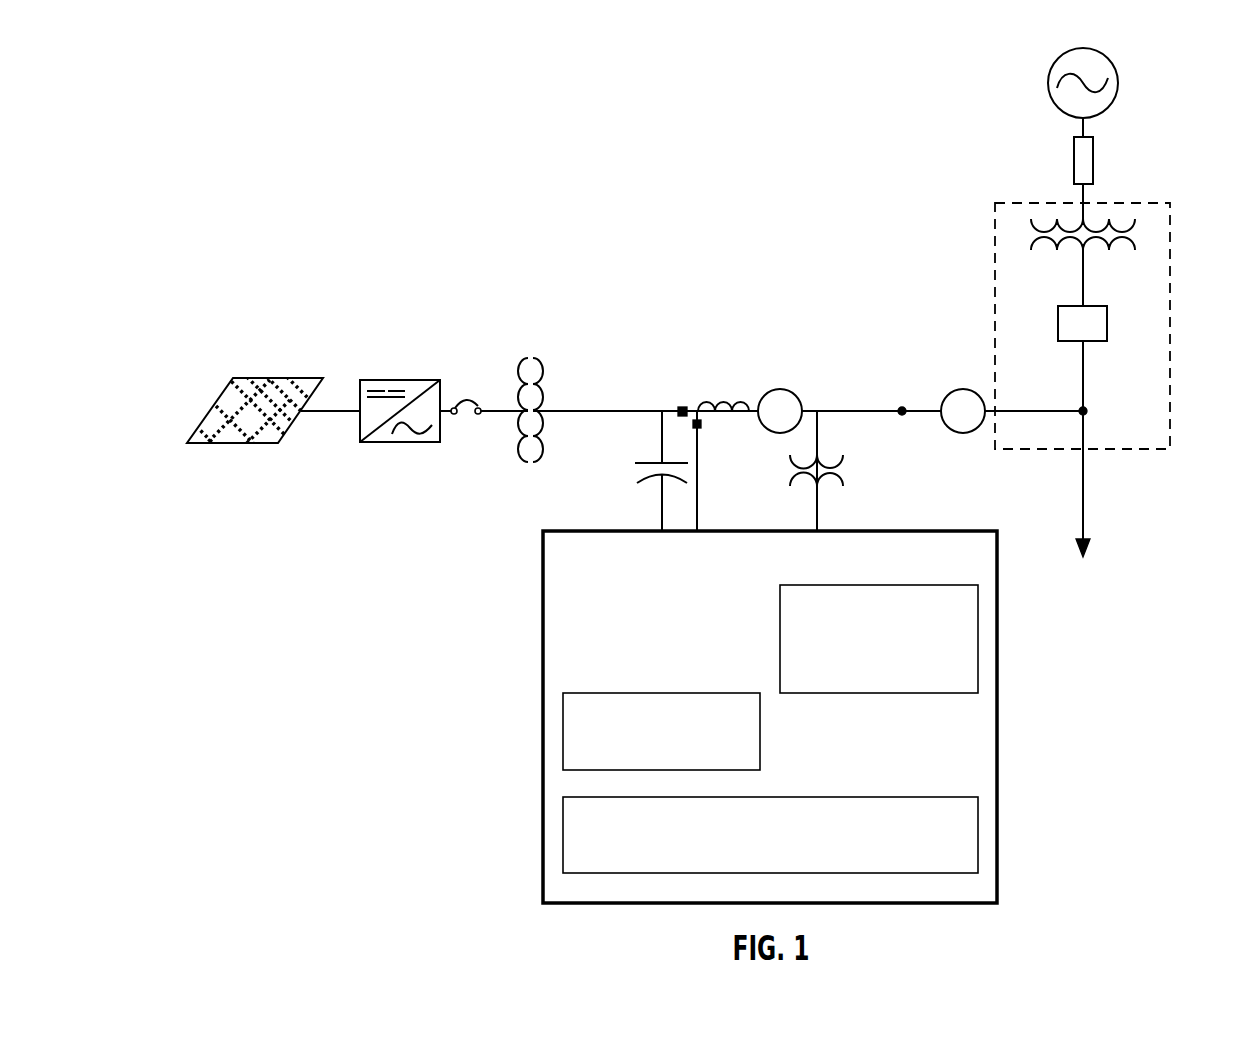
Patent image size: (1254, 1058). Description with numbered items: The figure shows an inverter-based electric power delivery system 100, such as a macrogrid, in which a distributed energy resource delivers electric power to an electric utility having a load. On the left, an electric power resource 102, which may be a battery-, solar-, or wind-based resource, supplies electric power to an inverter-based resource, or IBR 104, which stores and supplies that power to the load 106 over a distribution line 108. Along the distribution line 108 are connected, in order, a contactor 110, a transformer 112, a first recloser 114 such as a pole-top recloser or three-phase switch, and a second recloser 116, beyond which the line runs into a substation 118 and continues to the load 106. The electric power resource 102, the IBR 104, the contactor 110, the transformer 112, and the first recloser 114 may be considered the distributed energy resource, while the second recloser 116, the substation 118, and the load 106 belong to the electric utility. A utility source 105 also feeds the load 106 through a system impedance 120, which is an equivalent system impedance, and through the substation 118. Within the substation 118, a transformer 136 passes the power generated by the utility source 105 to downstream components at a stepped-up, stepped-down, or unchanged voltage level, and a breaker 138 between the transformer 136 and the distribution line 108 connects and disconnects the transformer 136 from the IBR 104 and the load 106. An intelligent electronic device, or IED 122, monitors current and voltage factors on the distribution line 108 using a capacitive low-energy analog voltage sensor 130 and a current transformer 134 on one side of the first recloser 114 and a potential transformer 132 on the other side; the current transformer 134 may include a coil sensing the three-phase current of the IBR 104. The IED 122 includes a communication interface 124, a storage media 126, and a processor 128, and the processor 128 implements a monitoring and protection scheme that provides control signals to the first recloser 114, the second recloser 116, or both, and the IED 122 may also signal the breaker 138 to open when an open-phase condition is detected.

The electric power delivery system 100 is at (813, 82).
The electric power resource 102 is at (275, 379).
The inverter-based resource (IBR) 104 is at (398, 380).
The utility source 105 is at (1117, 68).
The load 106 is at (1087, 539).
The distribution line 108 is at (625, 410).
The contactor 110 is at (466, 397).
The transformer 112 is at (540, 360).
The first recloser 114 is at (779, 389).
The second recloser 116 is at (962, 389).
The substation 118 is at (1171, 288).
The system impedance 120 is at (1095, 160).
The intelligent electronic device (IED) 122 is at (642, 611).
The communication interface 124 is at (862, 683).
The storage media 126 is at (642, 761).
The processor 128 is at (750, 863).
The capacitive low-energy analog voltage sensor 130 is at (650, 477).
The potential transformer 132 is at (800, 478).
The current transformer 134 is at (708, 404).
The transformer 136 is at (1138, 228).
The breaker 138 is at (1057, 325).